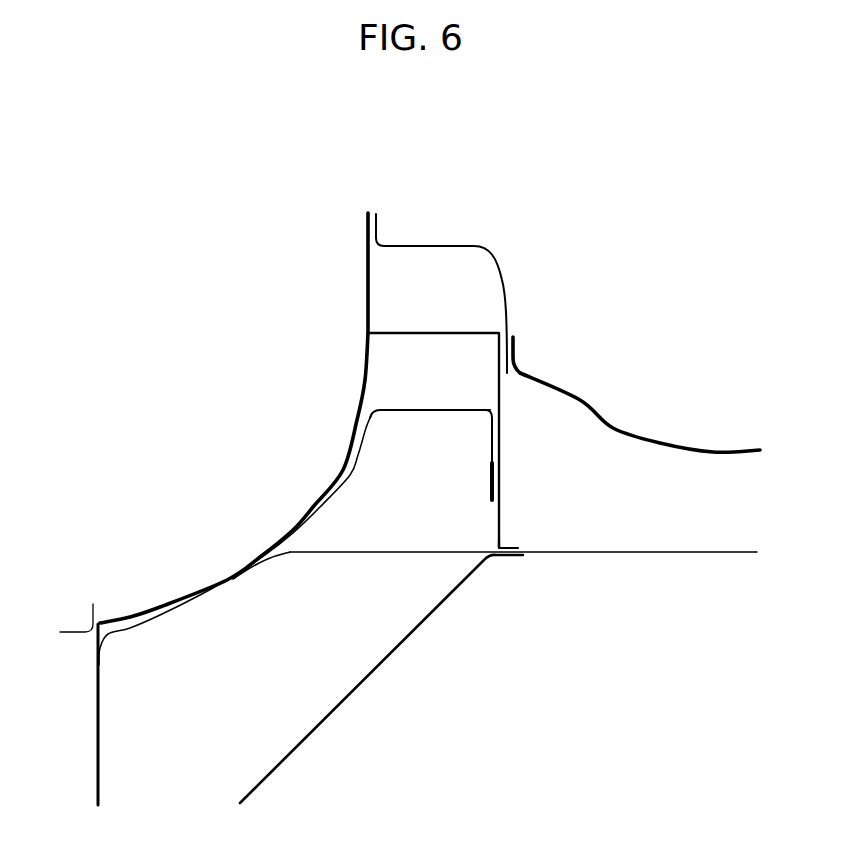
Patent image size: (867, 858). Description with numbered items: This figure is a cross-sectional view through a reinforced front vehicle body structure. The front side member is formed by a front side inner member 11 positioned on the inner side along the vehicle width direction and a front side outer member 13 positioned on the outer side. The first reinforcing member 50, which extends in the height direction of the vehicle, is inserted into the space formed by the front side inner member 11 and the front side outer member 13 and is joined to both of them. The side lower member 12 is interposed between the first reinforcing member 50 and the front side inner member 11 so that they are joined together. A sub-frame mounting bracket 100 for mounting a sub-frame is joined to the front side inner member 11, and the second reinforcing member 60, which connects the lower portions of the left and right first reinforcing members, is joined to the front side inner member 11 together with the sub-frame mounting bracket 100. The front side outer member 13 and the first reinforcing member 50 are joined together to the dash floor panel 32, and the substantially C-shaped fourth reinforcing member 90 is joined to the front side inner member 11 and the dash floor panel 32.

The sub-frame mounting bracket 100 is at (428, 246).
The front side inner member 11 is at (434, 333).
The side lower member 12 is at (500, 533).
The front side outer member 13 is at (365, 362).
The first reinforcing member 50 is at (429, 410).
The second reinforcing member 60 is at (620, 428).
The dash floor panel 32 is at (670, 555).
The fourth reinforcing member 90 is at (363, 682).